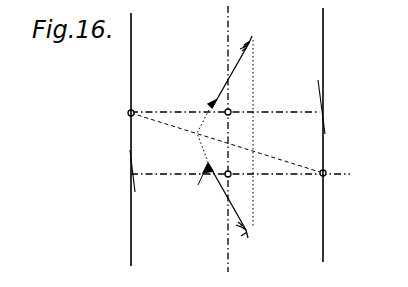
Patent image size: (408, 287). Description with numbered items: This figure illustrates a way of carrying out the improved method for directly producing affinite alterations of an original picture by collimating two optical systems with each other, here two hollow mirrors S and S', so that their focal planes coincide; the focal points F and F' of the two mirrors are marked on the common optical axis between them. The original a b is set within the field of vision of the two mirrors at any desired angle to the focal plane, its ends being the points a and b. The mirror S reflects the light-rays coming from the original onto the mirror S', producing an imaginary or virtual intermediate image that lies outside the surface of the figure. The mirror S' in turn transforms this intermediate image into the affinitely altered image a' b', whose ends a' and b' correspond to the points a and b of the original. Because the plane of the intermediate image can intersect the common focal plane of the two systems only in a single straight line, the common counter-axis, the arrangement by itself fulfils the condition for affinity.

The hollow mirror S is at (116, 139).
The hollow mirror S' is at (336, 135).
The focal point F is at (237, 163).
The conjugate focal point F' is at (239, 102).
The original picture end point a is at (198, 185).
The altered image end point a' is at (202, 103).
The original picture end point b is at (238, 207).
The altered image end point b' is at (246, 68).